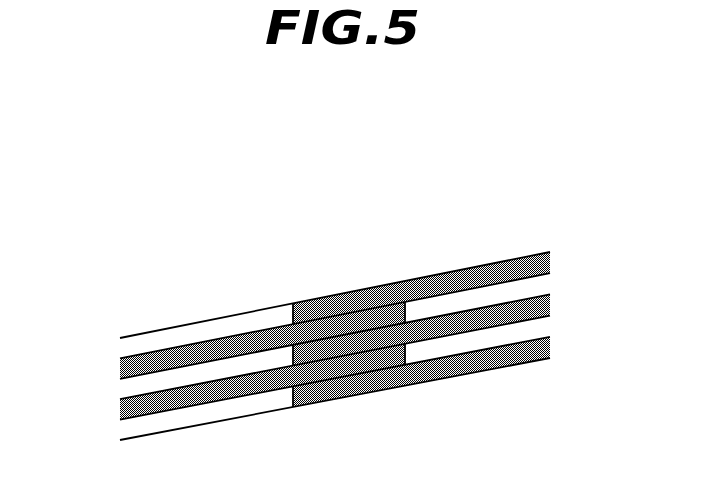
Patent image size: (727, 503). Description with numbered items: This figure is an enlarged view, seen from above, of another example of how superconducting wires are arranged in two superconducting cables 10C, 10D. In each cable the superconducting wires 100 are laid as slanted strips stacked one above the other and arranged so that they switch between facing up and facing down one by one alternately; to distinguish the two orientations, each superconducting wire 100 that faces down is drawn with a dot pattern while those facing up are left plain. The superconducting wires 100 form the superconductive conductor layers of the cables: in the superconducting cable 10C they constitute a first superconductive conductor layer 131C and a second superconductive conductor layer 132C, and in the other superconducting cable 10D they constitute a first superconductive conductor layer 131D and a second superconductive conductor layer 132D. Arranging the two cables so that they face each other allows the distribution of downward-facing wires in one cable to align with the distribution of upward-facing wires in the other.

The superconducting cable 10C is at (235, 348).
The superconducting cable 10D is at (354, 272).
The superconducting wire 100 is at (334, 294).
The first superconductive conductor layer 131C is at (262, 393).
The second superconductive conductor layer 132C is at (262, 393).
The first superconductive conductor layer 131D is at (335, 328).
The second superconductive conductor layer 132D is at (548, 239).